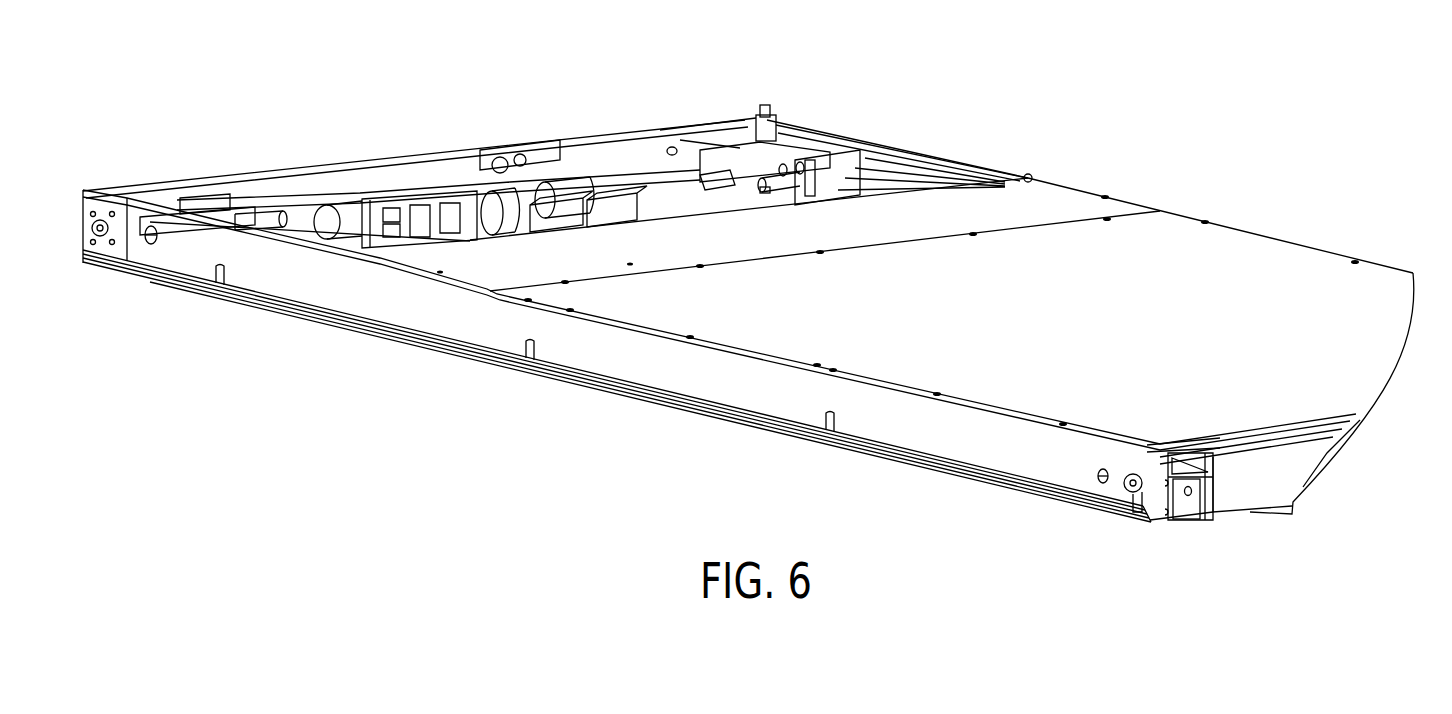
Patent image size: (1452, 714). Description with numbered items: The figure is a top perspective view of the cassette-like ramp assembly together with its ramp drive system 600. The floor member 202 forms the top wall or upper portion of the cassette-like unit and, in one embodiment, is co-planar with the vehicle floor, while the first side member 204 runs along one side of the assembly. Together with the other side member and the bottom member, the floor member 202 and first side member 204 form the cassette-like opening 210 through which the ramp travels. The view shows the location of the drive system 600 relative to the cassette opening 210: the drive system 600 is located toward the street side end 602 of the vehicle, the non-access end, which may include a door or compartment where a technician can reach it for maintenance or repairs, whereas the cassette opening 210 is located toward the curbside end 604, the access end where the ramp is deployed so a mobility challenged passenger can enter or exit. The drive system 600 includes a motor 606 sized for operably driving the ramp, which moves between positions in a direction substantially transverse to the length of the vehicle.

The street side end 602 is at (208, 128).
The drive system 600 is at (858, 146).
The motor 606 is at (420, 200).
The floor member 202 is at (1108, 365).
The first side member 204 is at (707, 385).
The cassette-like opening 210 is at (1250, 498).
The curbside end 604 is at (1382, 490).